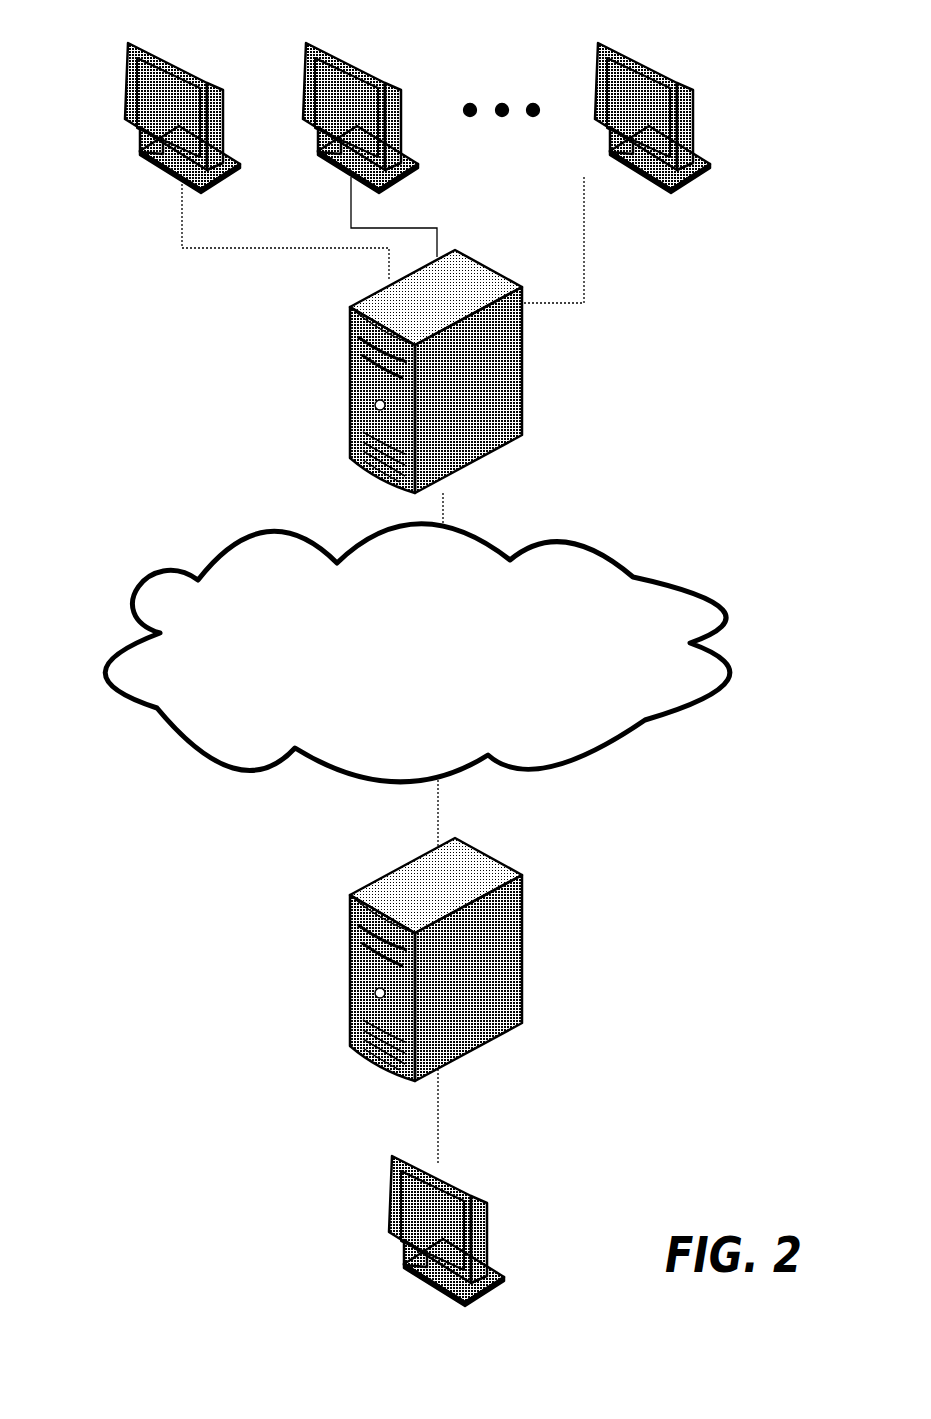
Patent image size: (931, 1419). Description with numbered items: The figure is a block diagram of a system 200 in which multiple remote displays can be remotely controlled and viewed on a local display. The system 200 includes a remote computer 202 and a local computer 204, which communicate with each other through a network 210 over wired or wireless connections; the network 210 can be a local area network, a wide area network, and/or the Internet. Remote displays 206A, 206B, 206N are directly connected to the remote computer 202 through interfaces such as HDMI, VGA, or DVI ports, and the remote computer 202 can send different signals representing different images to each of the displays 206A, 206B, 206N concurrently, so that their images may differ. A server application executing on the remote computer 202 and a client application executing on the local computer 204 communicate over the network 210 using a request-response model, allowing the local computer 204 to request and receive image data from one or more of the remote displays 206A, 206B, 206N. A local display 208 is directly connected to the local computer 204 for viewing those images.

The system 200 is at (170, 397).
The remote computer 202 is at (457, 250).
The local computer 204 is at (457, 838).
The remote display 206A is at (183, 62).
The remote display 206B is at (361, 62).
The remote display 206N is at (653, 62).
The local display 208 is at (448, 1176).
The network 210 is at (555, 538).